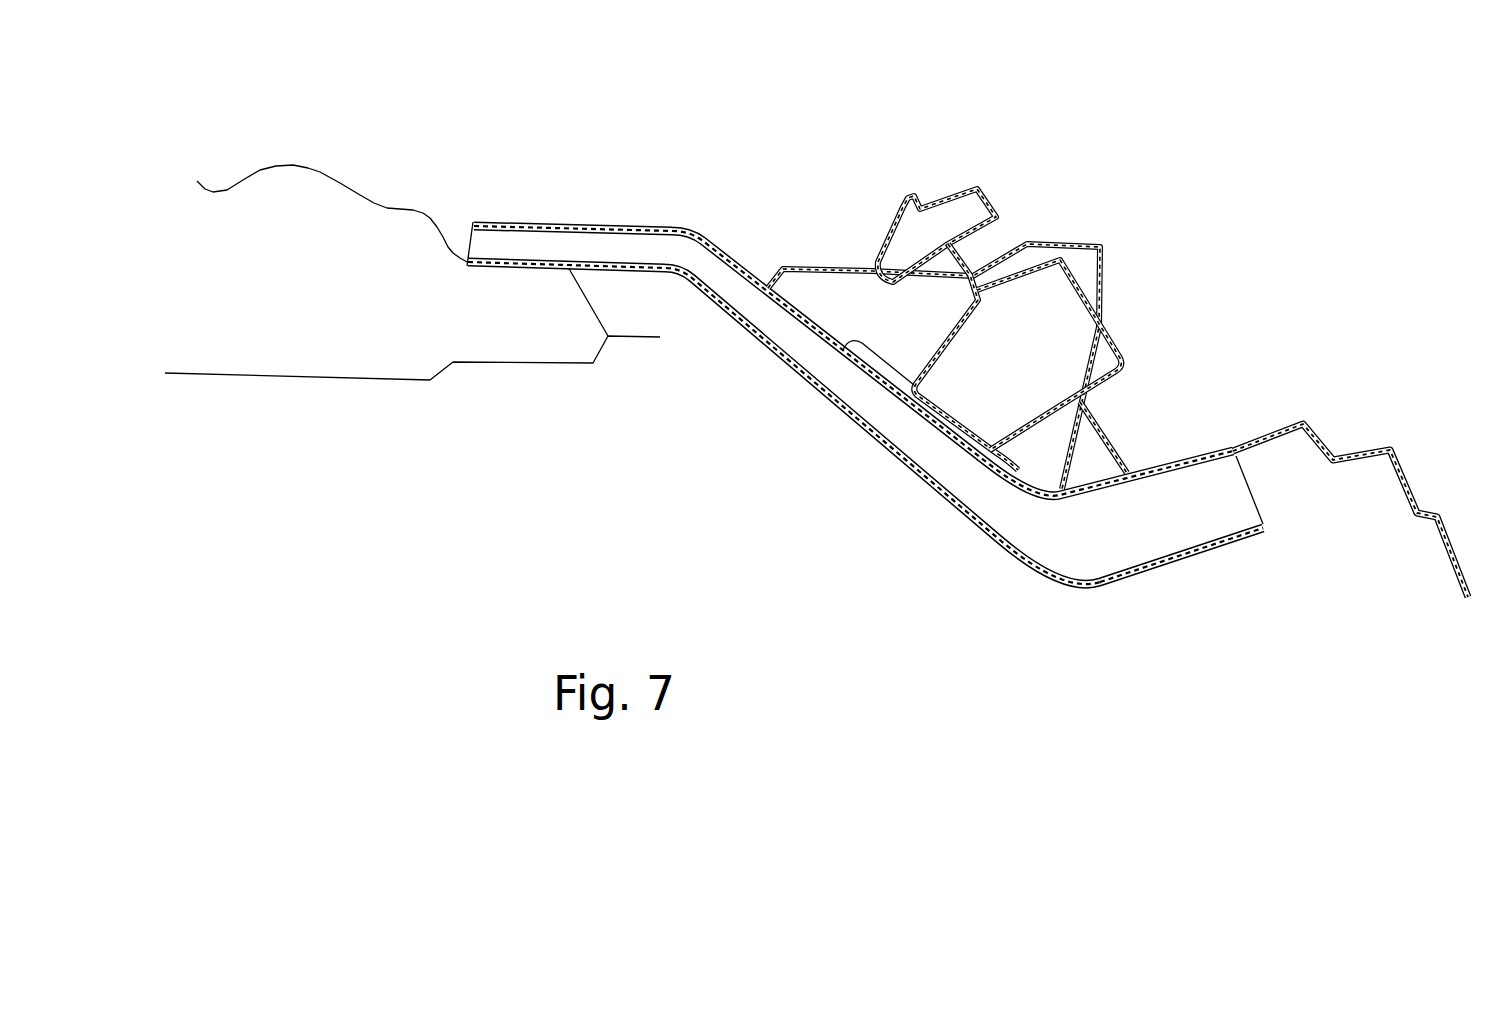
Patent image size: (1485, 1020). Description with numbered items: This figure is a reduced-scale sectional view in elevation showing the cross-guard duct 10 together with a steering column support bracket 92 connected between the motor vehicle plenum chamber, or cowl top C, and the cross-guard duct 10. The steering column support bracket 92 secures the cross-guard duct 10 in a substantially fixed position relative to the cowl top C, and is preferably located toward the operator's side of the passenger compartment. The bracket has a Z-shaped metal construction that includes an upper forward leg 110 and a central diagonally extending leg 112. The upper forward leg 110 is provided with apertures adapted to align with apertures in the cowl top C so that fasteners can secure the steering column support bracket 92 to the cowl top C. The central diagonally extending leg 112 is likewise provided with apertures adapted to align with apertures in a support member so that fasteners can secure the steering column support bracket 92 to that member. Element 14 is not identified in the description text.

The cross-guard duct 10 is at (1170, 128).
The cowl top C is at (333, 173).
The bed rail 14 is at (1130, 583).
The steering column support bracket 92 is at (850, 366).
The upper forward leg 110 is at (610, 227).
The central diagonally extending leg 112 is at (780, 360).